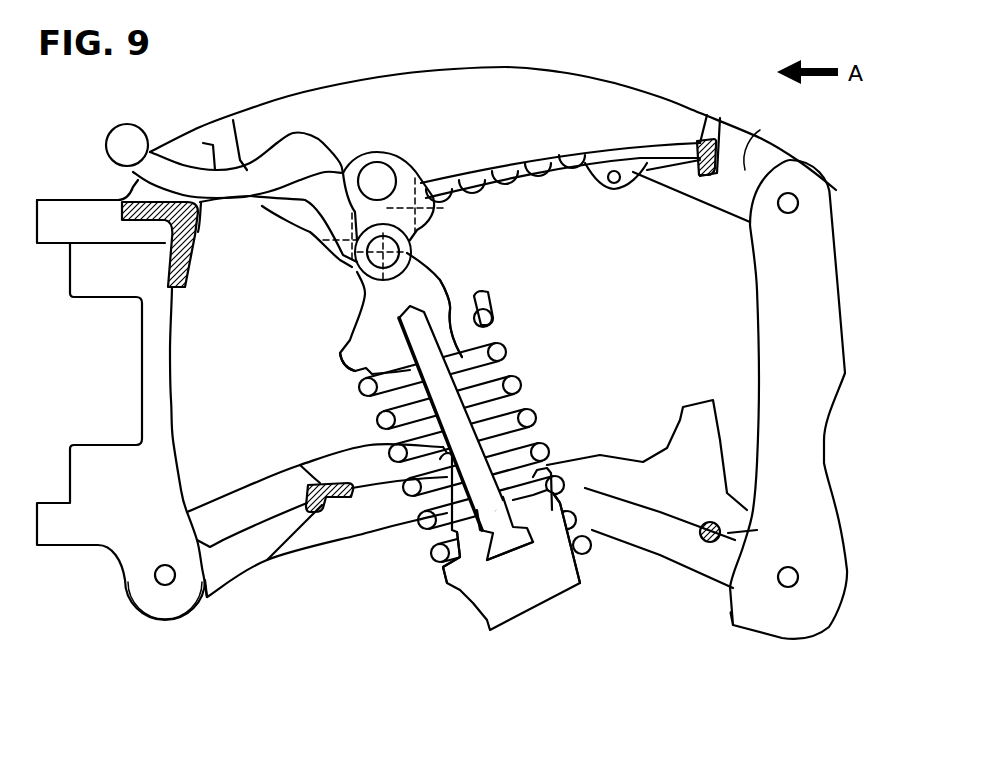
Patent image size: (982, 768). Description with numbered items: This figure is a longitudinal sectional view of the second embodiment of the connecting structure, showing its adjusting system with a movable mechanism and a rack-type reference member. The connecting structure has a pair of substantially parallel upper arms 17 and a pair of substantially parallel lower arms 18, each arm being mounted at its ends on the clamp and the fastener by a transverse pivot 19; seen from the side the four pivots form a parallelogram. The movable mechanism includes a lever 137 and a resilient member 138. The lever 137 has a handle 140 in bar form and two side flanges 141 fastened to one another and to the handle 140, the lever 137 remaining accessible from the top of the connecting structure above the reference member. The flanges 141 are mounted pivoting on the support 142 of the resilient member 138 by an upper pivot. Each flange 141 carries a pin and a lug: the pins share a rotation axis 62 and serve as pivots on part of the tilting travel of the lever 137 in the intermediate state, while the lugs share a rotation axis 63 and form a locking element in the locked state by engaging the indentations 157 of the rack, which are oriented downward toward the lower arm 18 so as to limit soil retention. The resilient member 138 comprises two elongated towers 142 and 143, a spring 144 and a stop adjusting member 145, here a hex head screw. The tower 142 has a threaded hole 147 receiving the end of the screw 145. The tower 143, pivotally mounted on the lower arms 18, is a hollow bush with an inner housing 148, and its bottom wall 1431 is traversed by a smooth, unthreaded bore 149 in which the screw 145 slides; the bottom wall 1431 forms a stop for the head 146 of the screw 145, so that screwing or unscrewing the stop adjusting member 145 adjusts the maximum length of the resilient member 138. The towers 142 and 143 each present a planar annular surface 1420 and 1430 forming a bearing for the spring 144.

The upper arm 17 is at (615, 123).
The lower arm 18 is at (360, 523).
The transverse pivot 19 is at (172, 205).
The lever 137 is at (134, 118).
The resilient member 138 is at (330, 356).
The handle 140 is at (113, 156).
The side flange 141 is at (298, 215).
The support / tower 142 is at (330, 355).
The tower 143 is at (577, 587).
The spring 144 is at (489, 435).
The stop adjusting member 145 is at (520, 400).
The head 146 is at (493, 563).
The threaded hole 147 is at (450, 310).
The inner housing 148 is at (530, 573).
The smooth bore 149 is at (530, 452).
The indentations 157 is at (505, 172).
The axis 62 is at (365, 197).
The axis 63 is at (423, 195).
The planar annular surface 1420 is at (477, 308).
The planar annular surface 1430 is at (585, 552).
The bottom wall 1431 is at (467, 570).